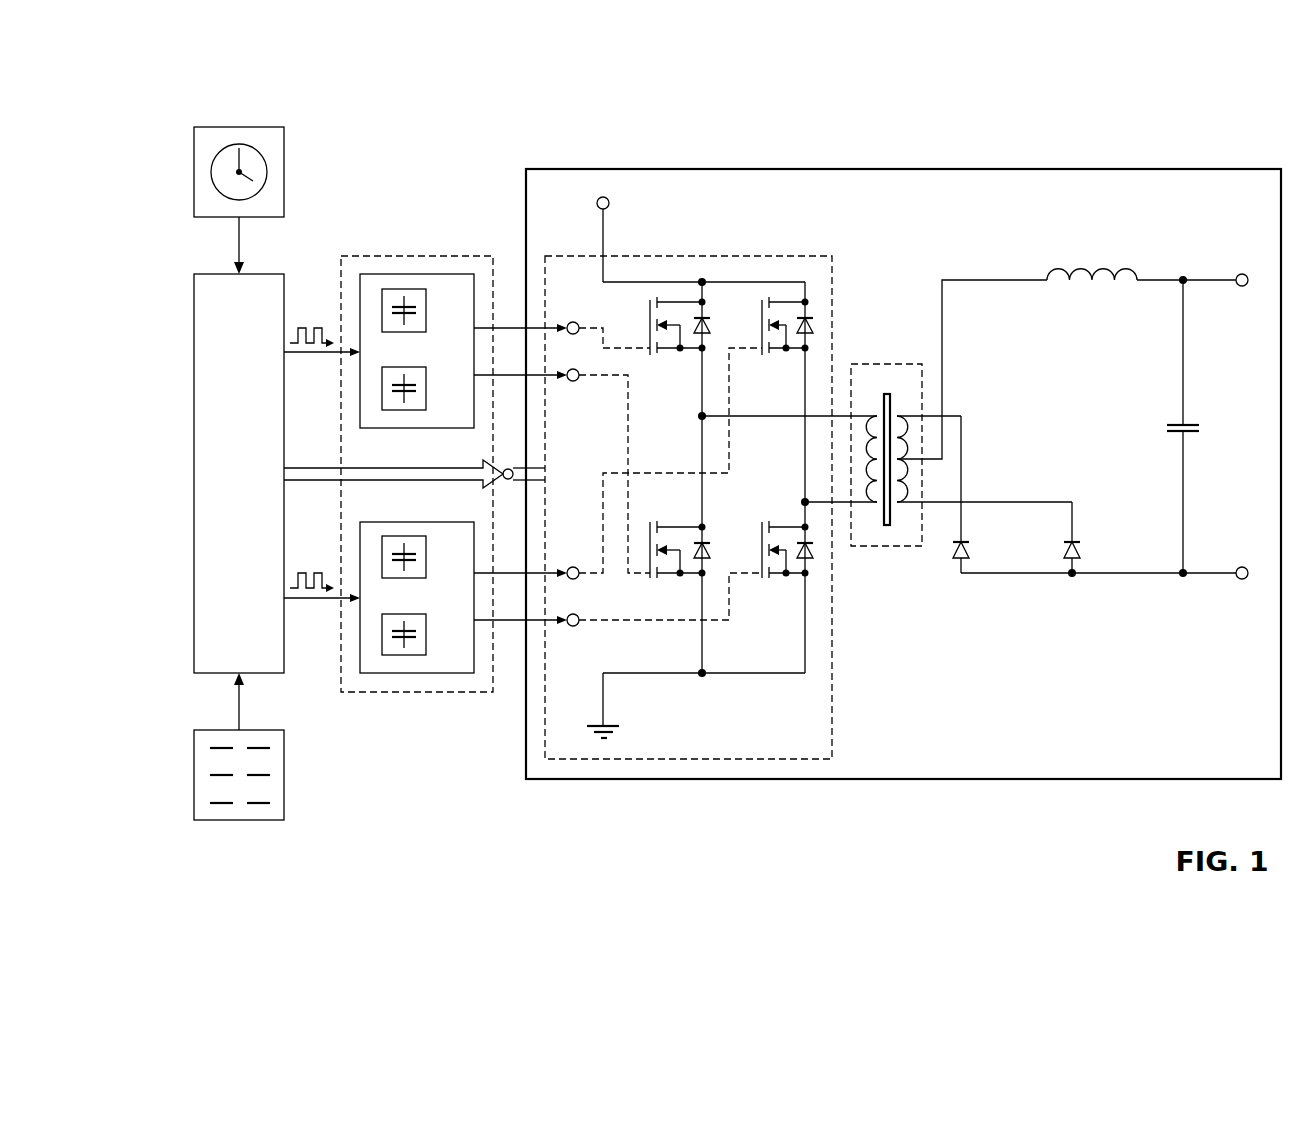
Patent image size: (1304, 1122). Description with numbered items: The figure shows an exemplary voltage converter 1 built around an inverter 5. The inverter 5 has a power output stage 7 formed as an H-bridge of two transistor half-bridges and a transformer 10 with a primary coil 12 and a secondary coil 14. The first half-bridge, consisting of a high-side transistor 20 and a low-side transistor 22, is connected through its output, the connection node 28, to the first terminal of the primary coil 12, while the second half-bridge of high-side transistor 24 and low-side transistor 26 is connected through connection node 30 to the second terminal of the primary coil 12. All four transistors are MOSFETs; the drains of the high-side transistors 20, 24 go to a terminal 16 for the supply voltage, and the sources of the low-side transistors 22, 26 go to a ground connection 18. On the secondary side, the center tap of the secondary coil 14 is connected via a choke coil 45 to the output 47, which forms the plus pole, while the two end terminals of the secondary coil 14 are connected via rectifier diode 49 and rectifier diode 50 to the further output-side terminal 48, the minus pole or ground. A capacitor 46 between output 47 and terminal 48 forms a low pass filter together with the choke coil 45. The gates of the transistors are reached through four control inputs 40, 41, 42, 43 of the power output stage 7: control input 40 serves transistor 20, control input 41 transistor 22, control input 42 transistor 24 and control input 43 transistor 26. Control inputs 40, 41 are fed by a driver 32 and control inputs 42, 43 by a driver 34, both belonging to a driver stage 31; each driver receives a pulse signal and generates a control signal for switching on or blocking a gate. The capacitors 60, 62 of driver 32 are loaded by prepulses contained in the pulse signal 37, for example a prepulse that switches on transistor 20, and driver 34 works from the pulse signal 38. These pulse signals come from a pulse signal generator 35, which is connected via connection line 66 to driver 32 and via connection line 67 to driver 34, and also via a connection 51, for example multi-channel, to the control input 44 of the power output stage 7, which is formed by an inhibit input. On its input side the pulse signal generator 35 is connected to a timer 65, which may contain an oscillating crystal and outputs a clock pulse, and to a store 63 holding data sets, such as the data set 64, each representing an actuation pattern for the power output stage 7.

The voltage converter 1 is at (1233, 155).
The inverter 5 is at (1063, 168).
The power output stage 7 is at (665, 759).
The transformer 10 is at (880, 546).
The primary coil 12 is at (868, 400).
The secondary coil 14 is at (902, 400).
The terminal for a supply voltage 16 is at (603, 197).
The ground connection 18 is at (605, 742).
The high-side transistor 20 is at (636, 325).
The low-side transistor 22 is at (650, 553).
The high-side transistor 24 is at (740, 325).
The low-side transistor 26 is at (760, 545).
The connection node 28 is at (698, 416).
The connection node 30 is at (800, 498).
The driver stage 31 is at (475, 692).
The driver 32 is at (393, 274).
The driver 34 is at (390, 673).
The pulse signal generator 35 is at (194, 322).
The pulse signal 37 is at (314, 326).
The pulse signal 38 is at (314, 572).
The control input 40 is at (571, 322).
The control input 41 is at (573, 381).
The control input 42 is at (573, 567).
The control input 43 is at (573, 626).
The control input 44 is at (505, 479).
The choke coil 45 is at (1100, 268).
The capacitor 46 is at (1177, 438).
The output 47 is at (1242, 274).
The output-side terminal 48 is at (1242, 579).
The rectifier diode 49 is at (975, 548).
The rectifier diode 50 is at (1085, 548).
The connection 51 is at (312, 468).
The capacitor 60 is at (426, 310).
The capacitor 62 is at (426, 388).
The store 63 is at (262, 820).
The data set 64 is at (220, 805).
The timer 65 is at (239, 127).
The connection line 66 is at (310, 356).
The connection line 67 is at (310, 602).